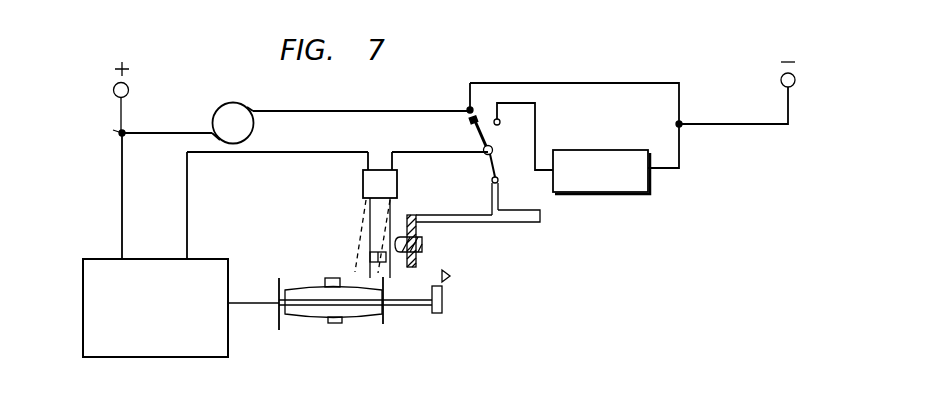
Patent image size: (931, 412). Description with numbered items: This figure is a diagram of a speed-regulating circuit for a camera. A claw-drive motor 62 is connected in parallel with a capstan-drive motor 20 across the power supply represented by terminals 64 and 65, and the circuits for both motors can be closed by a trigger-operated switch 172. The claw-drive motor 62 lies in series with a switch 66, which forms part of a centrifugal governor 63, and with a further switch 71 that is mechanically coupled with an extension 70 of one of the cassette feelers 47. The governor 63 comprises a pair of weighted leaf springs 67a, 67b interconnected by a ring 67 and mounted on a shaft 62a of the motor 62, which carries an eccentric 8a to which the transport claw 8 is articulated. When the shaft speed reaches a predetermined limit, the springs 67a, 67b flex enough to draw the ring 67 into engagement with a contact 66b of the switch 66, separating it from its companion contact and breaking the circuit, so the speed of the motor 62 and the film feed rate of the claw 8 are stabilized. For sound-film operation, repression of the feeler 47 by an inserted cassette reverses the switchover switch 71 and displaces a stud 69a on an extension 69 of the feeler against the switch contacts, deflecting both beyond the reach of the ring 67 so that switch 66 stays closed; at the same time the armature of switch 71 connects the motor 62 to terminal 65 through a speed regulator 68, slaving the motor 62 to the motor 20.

The terminal 64 is at (113, 90).
The trigger-operated switch 172 is at (112, 130).
The capstan-drive motor 20 is at (248, 141).
The terminal 65 is at (796, 80).
The speed regulator 68 is at (597, 142).
The switch 71 is at (486, 131).
The extension 70 is at (500, 196).
The cassette feeler 47 is at (526, 224).
The stud 69a is at (419, 236).
The extension 69 is at (418, 262).
The switch 66 is at (374, 210).
The contact 66b is at (366, 246).
The claw-drive motor 62 is at (82, 306).
The shaft 62a is at (252, 300).
The transport claw 8 is at (448, 298).
The weighted leaf spring 67a is at (283, 331).
The ring 67 is at (384, 325).
The weighted leaf spring 67b is at (302, 288).
The centrifugal governor 63 is at (338, 328).
The eccentric 8a is at (433, 316).